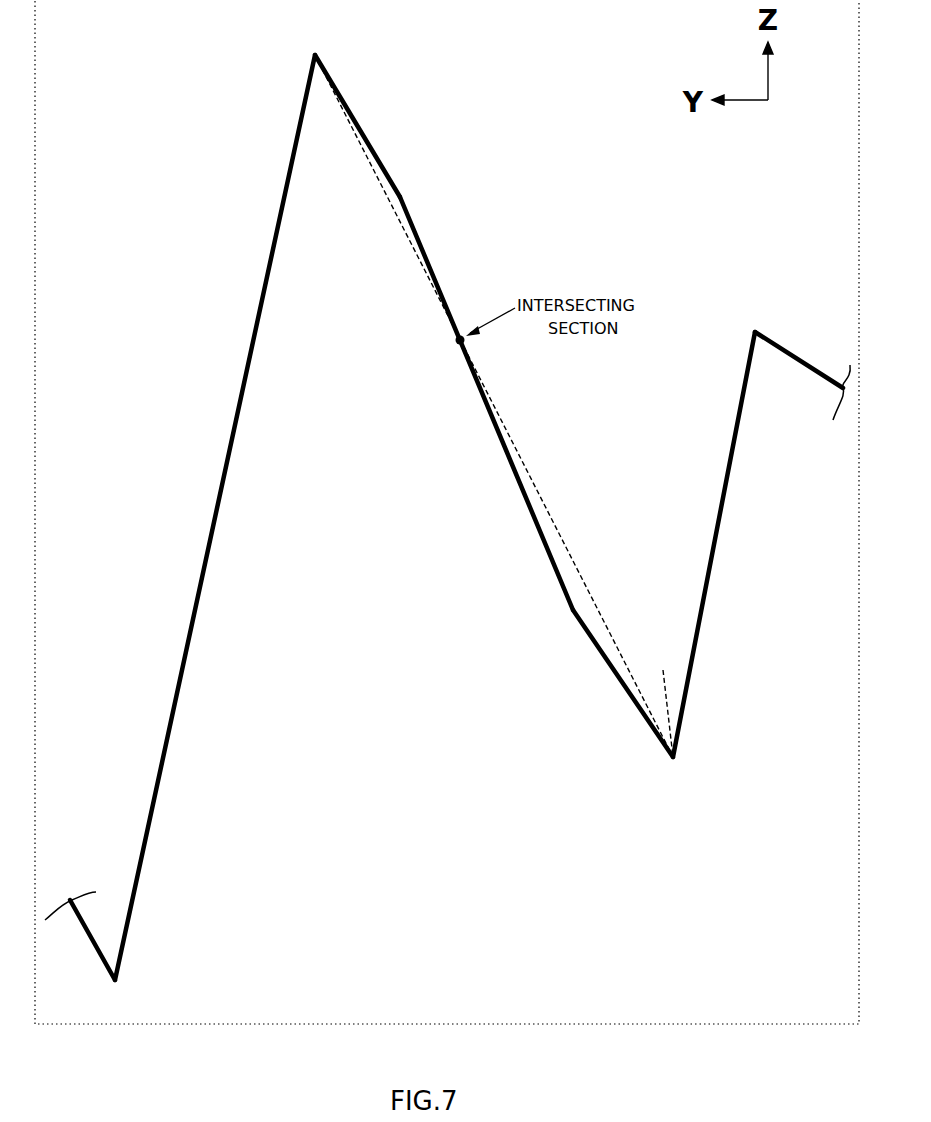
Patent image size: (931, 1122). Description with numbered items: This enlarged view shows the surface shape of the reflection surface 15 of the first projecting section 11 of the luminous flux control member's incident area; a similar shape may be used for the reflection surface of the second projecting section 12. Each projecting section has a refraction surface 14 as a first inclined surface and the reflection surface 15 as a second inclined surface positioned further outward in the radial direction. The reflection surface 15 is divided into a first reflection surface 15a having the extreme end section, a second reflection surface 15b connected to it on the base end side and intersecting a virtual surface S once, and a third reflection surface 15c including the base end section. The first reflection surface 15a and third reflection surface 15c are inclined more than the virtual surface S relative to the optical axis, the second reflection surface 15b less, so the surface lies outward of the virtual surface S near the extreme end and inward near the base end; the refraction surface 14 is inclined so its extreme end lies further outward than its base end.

The first projecting section 11 is at (447, 534).
The second projecting section 12 is at (100, 870).
The refraction surface 14 is at (188, 660).
The reflection surface 15 is at (419, 406).
The first reflection surface 15a is at (544, 683).
The second reflection surface 15b is at (573, 610).
The third reflection surface 15c is at (383, 197).
The virtual surface S is at (530, 505).